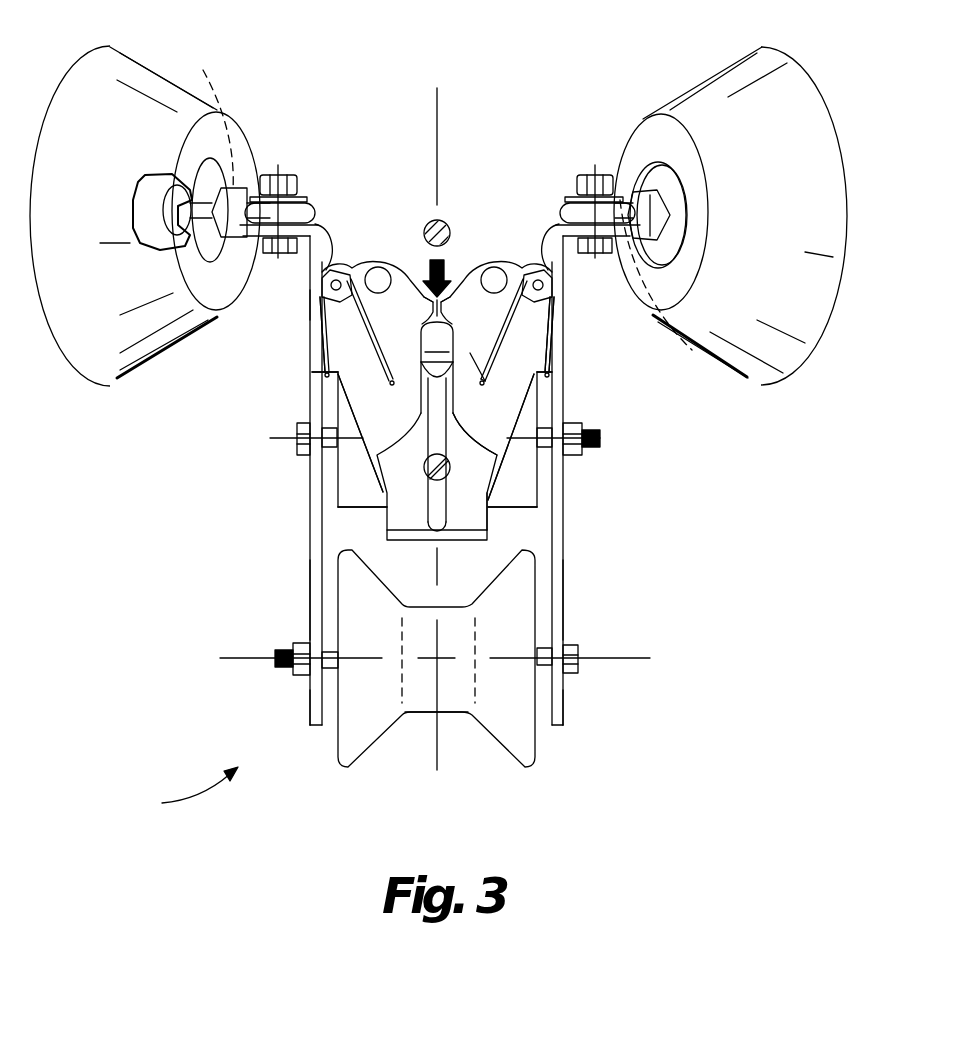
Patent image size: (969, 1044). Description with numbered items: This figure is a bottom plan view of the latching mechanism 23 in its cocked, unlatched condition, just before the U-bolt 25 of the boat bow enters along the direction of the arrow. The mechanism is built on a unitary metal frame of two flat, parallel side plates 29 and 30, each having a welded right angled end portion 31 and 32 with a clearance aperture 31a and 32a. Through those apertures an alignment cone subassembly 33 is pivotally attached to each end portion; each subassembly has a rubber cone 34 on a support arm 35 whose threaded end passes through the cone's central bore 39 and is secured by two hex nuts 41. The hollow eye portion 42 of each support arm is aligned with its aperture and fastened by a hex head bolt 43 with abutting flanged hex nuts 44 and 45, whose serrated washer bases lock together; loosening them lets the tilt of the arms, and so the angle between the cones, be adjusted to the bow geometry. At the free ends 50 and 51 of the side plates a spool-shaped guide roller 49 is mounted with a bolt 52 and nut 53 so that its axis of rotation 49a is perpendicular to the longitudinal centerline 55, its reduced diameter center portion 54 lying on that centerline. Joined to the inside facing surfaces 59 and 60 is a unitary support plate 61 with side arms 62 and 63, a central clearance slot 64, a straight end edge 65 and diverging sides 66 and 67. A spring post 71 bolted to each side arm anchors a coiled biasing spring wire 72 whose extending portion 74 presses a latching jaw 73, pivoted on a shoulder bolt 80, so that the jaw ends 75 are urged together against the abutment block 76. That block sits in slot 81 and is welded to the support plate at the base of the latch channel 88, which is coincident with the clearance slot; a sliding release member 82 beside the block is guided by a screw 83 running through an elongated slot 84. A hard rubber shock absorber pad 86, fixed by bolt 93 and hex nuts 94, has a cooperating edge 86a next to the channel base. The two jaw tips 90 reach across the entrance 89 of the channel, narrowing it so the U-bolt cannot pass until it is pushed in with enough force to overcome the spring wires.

The latching mechanism 23 is at (186, 793).
The U-bolt 25 is at (420, 213).
The side plate 29 is at (565, 553).
The side plate 30 is at (312, 578).
The right angled end portion 31 is at (563, 227).
The clearance aperture 31a is at (605, 175).
The right angled end portion 32 is at (252, 250).
The clearance aperture 32a is at (318, 195).
The alignment cone subassembly 33 is at (137, 73).
The rubber cone 34 is at (100, 78).
The support arm 35 is at (153, 218).
The central bore 39 is at (230, 143).
The hex nut 41 is at (145, 192).
The hollow eye portion 42 is at (597, 174).
The hex head bolt 43 is at (283, 257).
The flanged hex nut 44 is at (258, 172).
The flanged hex nut 45 is at (262, 197).
The guide roller 49 is at (358, 750).
The centerline axis of rotation 49a is at (220, 658).
The free end 50 is at (553, 728).
The free end 51 is at (318, 740).
The bolt 52 is at (577, 673).
The nut 53 is at (297, 677).
The reduced diameter center portion 54 is at (440, 660).
The longitudinal centerline 55 is at (437, 765).
The inside facing surface 59 is at (550, 593).
The inside facing surface 60 is at (327, 630).
The support plate 61 is at (373, 490).
The side arm 62 is at (540, 335).
The side arm 63 is at (307, 300).
The central clearance slot 64 is at (470, 353).
The straight end edge 65 is at (463, 540).
The diverging side 66 is at (507, 498).
The diverging side 67 is at (380, 473).
The spring post 71 is at (334, 270).
The coiled biasing spring wire 72 is at (320, 317).
The latching jaw 73 is at (428, 405).
The extending portion 74 is at (312, 316).
The end 75 is at (463, 415).
The abutment block 76 is at (420, 457).
The shoulder bolt 80 is at (372, 268).
The slot 81 is at (427, 386).
The sliding release member 82 is at (495, 477).
The screw 83 is at (497, 453).
The slot 84 is at (437, 507).
The shock absorber pad 86 is at (347, 507).
The cooperating edge 86a is at (420, 362).
The latch channel 88 is at (437, 367).
The entrance 89 is at (430, 287).
The jaw tip 90 is at (418, 317).
The bolt 93 is at (270, 438).
The hex nut 94 is at (593, 437).